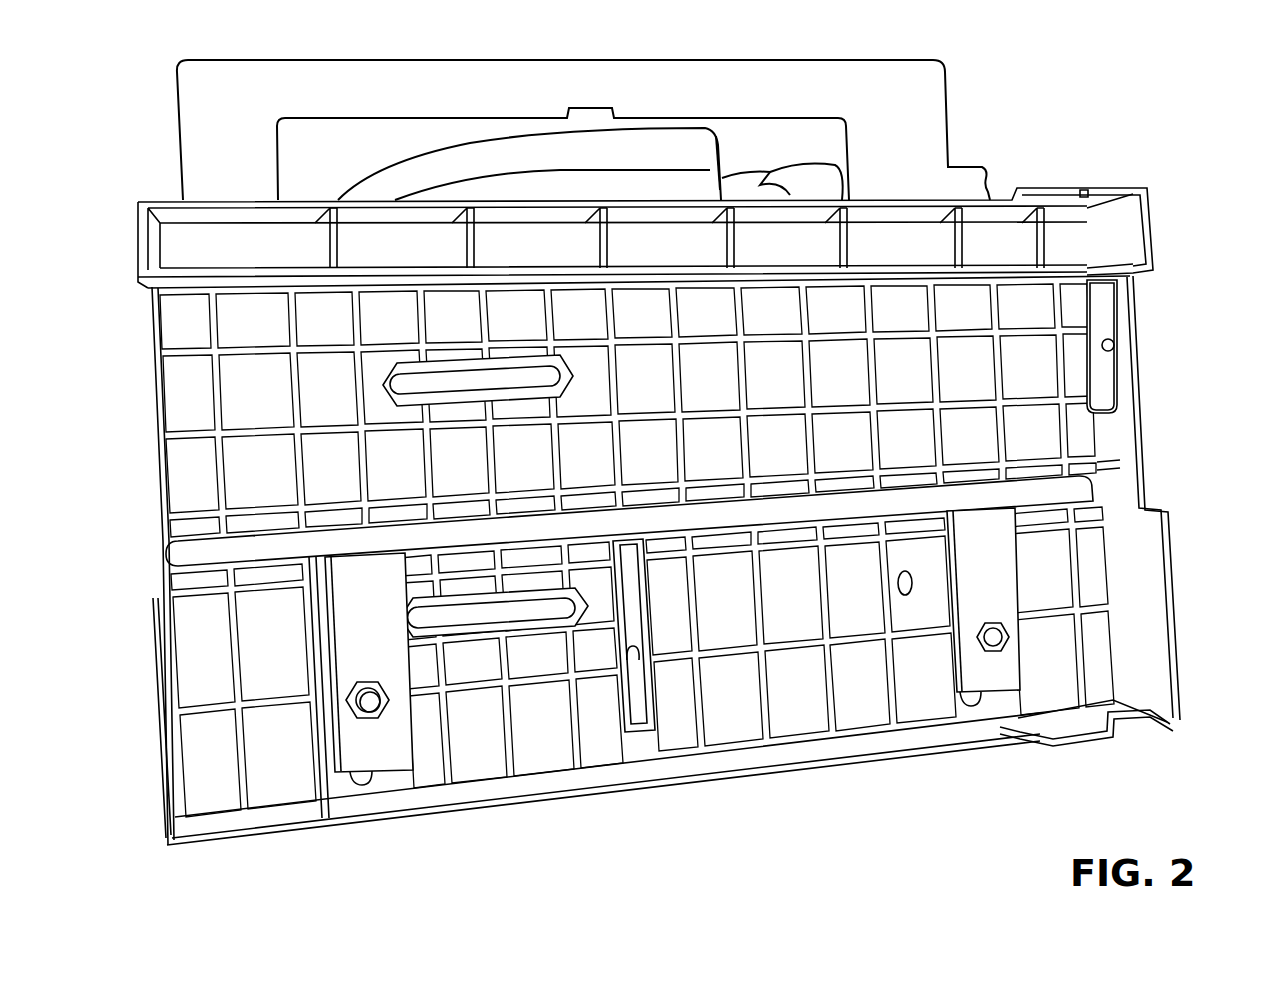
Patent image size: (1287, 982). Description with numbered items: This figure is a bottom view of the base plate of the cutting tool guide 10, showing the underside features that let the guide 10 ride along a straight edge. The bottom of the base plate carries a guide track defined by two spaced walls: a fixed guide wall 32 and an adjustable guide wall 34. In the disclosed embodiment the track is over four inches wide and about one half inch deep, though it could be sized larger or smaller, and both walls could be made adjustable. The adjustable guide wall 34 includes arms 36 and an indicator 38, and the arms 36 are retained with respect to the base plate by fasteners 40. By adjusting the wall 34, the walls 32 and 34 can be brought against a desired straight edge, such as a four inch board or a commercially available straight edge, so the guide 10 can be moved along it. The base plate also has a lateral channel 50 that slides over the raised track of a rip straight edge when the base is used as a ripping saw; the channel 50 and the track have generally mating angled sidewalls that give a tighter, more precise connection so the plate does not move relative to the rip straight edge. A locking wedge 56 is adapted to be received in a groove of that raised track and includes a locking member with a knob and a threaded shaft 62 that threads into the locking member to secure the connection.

The cutting tool guide 10 is at (1138, 139).
The fixed guide wall 32 is at (943, 242).
The adjustable guide wall 34 is at (775, 503).
The arms 36 is at (395, 740).
The indicator 38 is at (629, 645).
The fasteners 40 is at (370, 712).
The lateral channel 50 is at (1147, 703).
The locking wedge 56 is at (1113, 398).
The threaded shaft 62 is at (1114, 343).